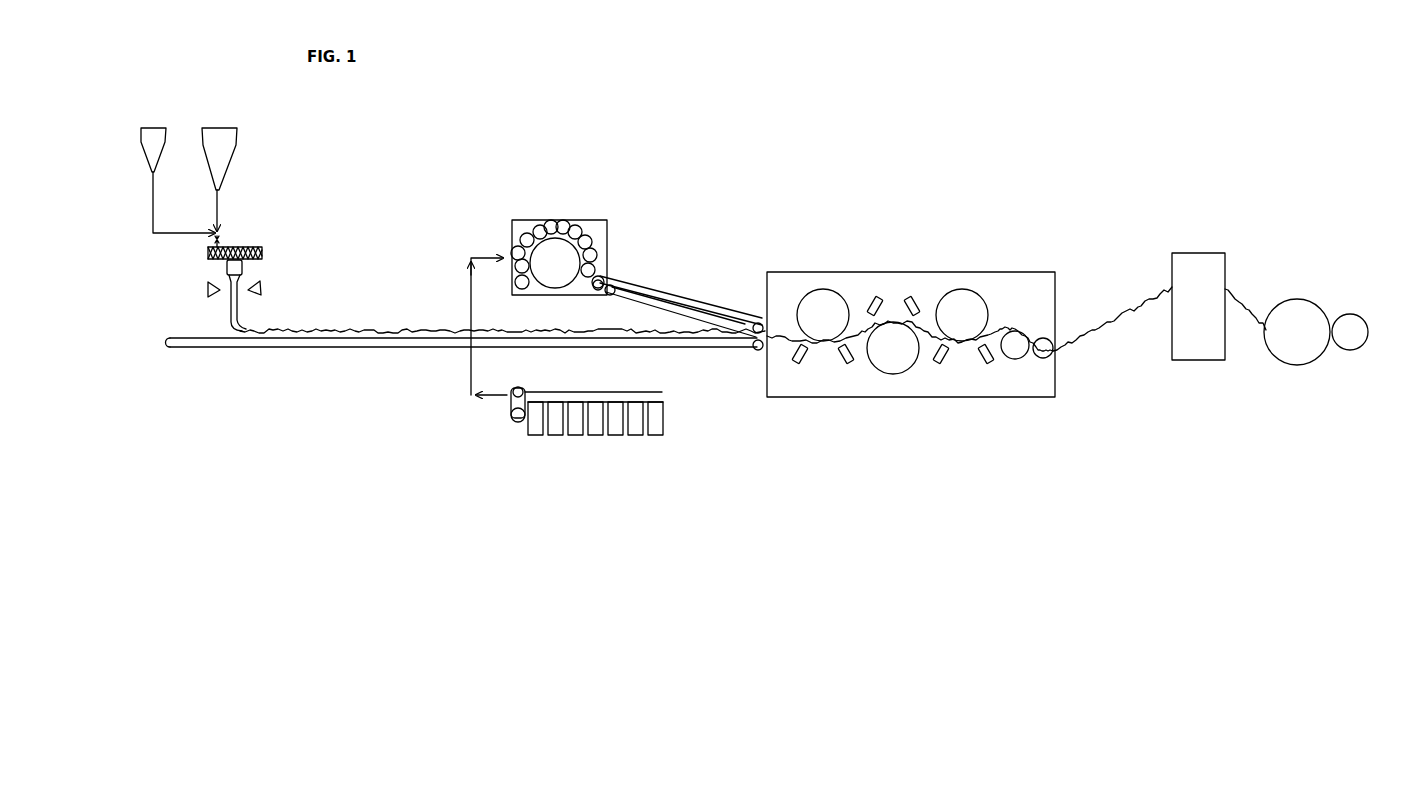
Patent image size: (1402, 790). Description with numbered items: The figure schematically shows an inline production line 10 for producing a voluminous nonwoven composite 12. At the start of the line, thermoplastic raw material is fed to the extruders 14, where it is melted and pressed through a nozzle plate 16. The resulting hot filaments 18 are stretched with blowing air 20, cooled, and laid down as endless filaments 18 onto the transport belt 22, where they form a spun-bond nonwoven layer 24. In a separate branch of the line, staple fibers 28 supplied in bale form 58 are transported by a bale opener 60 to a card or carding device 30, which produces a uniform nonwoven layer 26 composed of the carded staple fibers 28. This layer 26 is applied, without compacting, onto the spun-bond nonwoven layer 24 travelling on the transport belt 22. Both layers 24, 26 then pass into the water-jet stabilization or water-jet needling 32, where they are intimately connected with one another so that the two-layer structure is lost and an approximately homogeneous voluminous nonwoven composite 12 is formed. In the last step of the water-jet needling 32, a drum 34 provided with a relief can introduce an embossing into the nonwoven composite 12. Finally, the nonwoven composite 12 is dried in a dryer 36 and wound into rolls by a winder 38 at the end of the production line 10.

The inline production line 10 is at (983, 93).
The voluminous nonwoven composite 12 is at (1133, 308).
The extruders 14 is at (143, 128).
The nozzle plate 16 is at (262, 253).
The filaments 18 is at (238, 288).
The blowing air 20 is at (257, 293).
The transport belt 22 is at (233, 348).
The spun-bond nonwoven layer 24 is at (402, 326).
The layer composed of carded staple fibers 26 is at (715, 300).
The staple fibers 28 is at (652, 297).
The carding device 30 is at (524, 222).
The water-jet needling 32 is at (873, 271).
The drum provided with a relief 34 is at (972, 317).
The dryer 36 is at (1196, 253).
The winder 38 is at (1316, 306).
The bale form 58 is at (556, 425).
The bale opener 60 is at (655, 400).